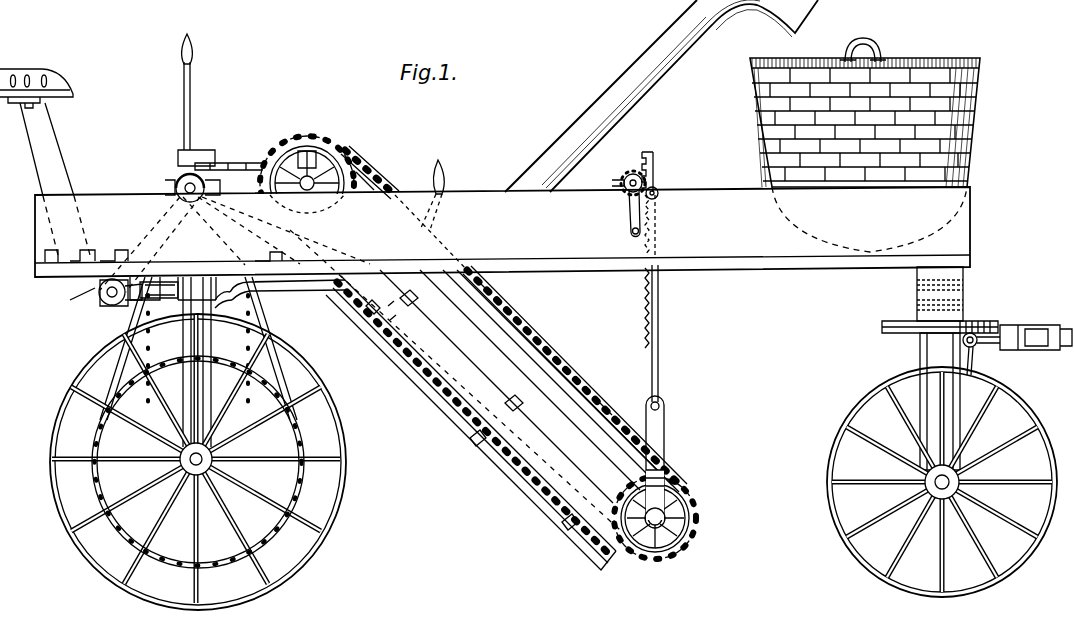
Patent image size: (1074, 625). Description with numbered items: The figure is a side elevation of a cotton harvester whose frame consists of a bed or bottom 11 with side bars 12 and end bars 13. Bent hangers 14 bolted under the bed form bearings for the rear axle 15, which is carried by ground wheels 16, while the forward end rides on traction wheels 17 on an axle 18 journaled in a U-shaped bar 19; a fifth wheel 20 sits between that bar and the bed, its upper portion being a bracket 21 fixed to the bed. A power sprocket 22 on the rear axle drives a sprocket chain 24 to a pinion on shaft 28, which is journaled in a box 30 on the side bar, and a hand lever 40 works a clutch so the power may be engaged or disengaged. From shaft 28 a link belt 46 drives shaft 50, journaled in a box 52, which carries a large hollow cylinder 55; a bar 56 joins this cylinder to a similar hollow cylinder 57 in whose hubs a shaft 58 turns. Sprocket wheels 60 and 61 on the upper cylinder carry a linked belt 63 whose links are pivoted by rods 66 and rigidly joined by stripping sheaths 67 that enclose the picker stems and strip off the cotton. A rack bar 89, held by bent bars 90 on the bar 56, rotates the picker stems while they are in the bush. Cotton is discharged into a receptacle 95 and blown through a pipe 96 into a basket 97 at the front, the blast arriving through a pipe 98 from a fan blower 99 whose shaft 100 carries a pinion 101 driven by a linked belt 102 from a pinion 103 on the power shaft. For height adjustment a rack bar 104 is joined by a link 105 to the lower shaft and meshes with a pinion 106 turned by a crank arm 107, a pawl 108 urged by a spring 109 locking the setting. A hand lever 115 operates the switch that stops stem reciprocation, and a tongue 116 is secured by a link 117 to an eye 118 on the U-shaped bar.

The bed or bottom 11 is at (502, 232).
The side bar 12 is at (40, 70).
The end bar 13 is at (31, 155).
The bent hanger 14 is at (208, 338).
The rear axle 15 is at (212, 456).
The ground wheel 16 is at (345, 476).
The traction wheel 17 is at (1056, 400).
The axle 18 is at (950, 480).
The U-shaped bar 19 is at (920, 360).
The fifth wheel 20 is at (985, 320).
The bracket 21 is at (966, 284).
The power sprocket 22 is at (265, 530).
The sprocket chain 24 is at (275, 352).
The shaft 28 is at (180, 182).
The box 30 is at (235, 244).
The hand lever 40 is at (191, 76).
The link belt 46 is at (236, 162).
The shaft 50 is at (313, 180).
The box 52 is at (365, 158).
The hollow cylinder 55 is at (312, 150).
The bar 56 is at (575, 483).
The hollow cylinder 57 is at (690, 506).
The shaft 58 is at (653, 524).
The sprocket wheel 60 is at (372, 172).
The sprocket wheel 61 is at (666, 466).
The linked belt 63 is at (540, 345).
The rod 66 is at (598, 390).
The stripping sheath 67 is at (505, 298).
The rack bar 89 is at (538, 468).
The bent bar 90 is at (475, 450).
The receptacle 95 is at (384, 322).
The pipe 96 is at (596, 96).
The basket 97 is at (934, 58).
The pipe 98 is at (296, 290).
The fan blower 99 is at (100, 296).
The shaft 100 is at (104, 303).
The pinion 101 is at (113, 298).
The linked belt 102 is at (96, 286).
The pinion 103 is at (178, 190).
The rack bar 104 is at (660, 318).
The link 105 is at (668, 422).
The pinion 106 is at (630, 194).
The crank arm 107 is at (630, 232).
The pawl 108 is at (656, 176).
The spring 109 is at (658, 191).
The hand lever 115 is at (443, 172).
The tongue 116 is at (1040, 325).
The link 117 is at (985, 343).
The eye 118 is at (970, 372).